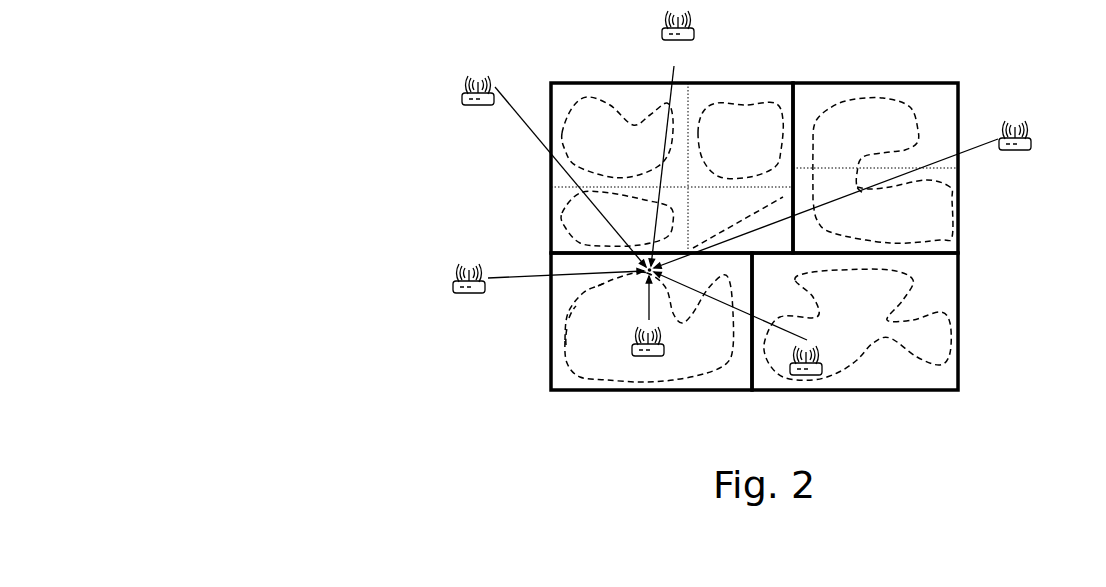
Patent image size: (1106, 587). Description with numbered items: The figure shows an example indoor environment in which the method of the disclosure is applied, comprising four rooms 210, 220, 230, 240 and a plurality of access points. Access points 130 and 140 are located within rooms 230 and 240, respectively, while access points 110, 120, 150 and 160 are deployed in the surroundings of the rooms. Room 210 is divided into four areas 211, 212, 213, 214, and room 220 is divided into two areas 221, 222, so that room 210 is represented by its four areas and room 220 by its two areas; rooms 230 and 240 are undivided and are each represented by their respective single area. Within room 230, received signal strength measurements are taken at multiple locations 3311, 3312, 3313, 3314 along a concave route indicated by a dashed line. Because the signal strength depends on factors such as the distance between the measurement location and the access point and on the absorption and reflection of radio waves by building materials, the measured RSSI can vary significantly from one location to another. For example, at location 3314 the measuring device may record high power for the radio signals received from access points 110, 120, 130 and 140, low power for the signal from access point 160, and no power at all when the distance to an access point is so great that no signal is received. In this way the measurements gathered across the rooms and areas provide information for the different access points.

The access point 110 is at (554, 171).
The access point 120 is at (548, 290).
The access point 130 is at (648, 328).
The access point 140 is at (754, 323).
The access point 150 is at (843, 194).
The access point 160 is at (671, 138).
The room 210 is at (758, 82).
The area 211 is at (637, 100).
The area 212 is at (742, 117).
The area 213 is at (552, 193).
The area 214 is at (720, 205).
The room 220 is at (948, 83).
The area 221 is at (922, 103).
The area 222 is at (958, 236).
The room 230 is at (548, 318).
The room 240 is at (960, 319).
The measurement location 3311 is at (567, 333).
The measurement location 3312 is at (573, 313).
The measurement location 3313 is at (603, 288).
The measurement location 3314 is at (645, 273).